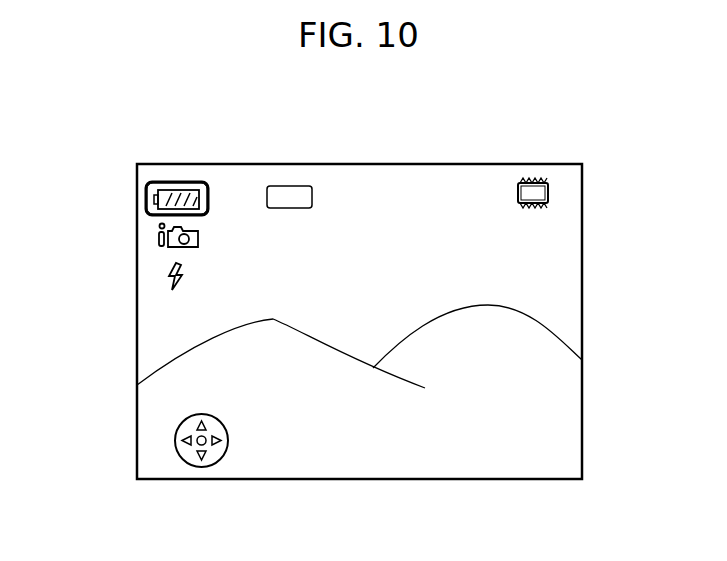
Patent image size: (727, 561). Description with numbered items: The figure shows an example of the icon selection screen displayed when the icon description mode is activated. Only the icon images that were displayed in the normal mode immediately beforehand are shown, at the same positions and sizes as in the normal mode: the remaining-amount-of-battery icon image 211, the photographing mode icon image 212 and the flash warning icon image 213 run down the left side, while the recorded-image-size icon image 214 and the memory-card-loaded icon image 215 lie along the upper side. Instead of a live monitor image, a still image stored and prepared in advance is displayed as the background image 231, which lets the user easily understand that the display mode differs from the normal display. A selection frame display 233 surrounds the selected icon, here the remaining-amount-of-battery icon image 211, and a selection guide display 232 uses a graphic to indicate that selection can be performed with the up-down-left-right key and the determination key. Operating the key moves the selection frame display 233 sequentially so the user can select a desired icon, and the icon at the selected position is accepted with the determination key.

The remaining-amount-of-battery icon image 211 is at (146, 201).
The photographing mode icon image 212 is at (151, 240).
The flash warning icon image 213 is at (158, 278).
The recorded-image-size icon image 214 is at (308, 185).
The memory-card-loaded icon image 215 is at (530, 180).
The background image 231 is at (567, 268).
The selection guide display 232 is at (202, 468).
The selection frame display 233 is at (175, 180).